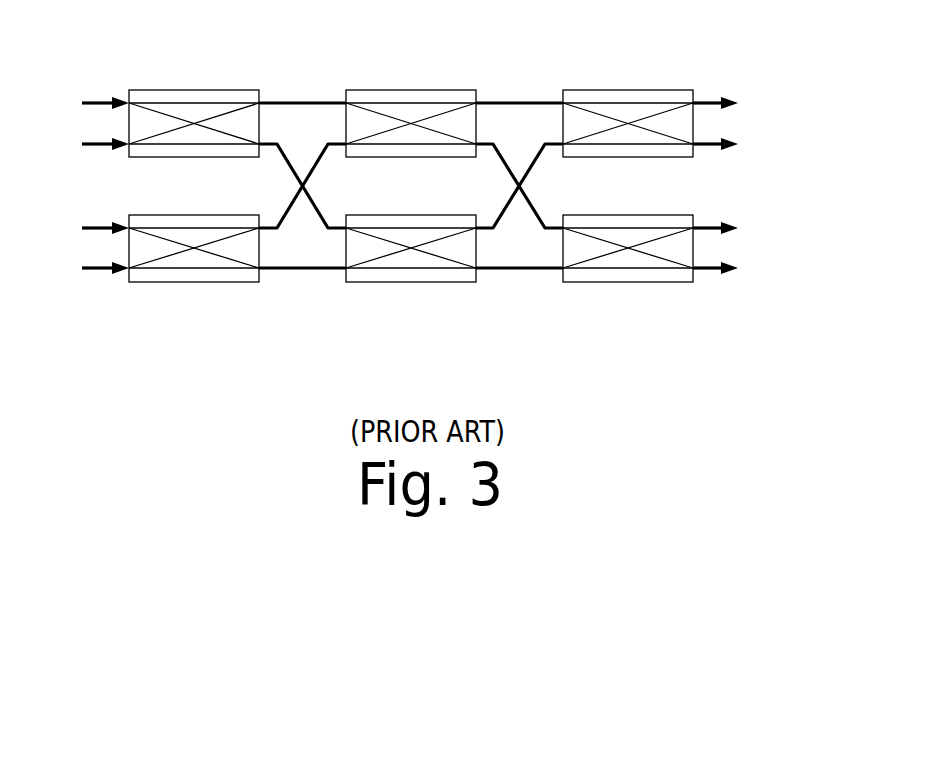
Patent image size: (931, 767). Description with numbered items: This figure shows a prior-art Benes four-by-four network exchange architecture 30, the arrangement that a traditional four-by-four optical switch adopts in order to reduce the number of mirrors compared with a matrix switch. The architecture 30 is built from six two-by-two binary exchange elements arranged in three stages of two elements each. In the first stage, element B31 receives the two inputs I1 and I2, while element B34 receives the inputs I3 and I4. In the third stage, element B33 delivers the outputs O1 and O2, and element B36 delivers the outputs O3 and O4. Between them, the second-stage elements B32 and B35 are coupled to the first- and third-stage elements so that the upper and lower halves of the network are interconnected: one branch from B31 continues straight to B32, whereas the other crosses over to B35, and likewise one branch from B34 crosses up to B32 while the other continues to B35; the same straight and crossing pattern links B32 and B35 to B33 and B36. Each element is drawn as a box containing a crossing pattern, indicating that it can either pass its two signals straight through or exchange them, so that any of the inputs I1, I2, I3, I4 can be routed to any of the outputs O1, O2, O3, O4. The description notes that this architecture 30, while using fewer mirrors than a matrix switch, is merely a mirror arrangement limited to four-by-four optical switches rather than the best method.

The Benes 4×4 network exchange architecture 30 is at (726, 61).
The binary switch element B31 is at (212, 89).
The binary switch element B32 is at (428, 90).
The binary switch element B33 is at (646, 90).
The binary switch element B34 is at (175, 283).
The binary switch element B35 is at (400, 283).
The binary switch element B36 is at (613, 283).
The input I1 is at (88, 102).
The input I2 is at (88, 144).
The input I3 is at (88, 228).
The input I4 is at (88, 268).
The output O1 is at (735, 108).
The output O2 is at (735, 149).
The output O3 is at (735, 233).
The output O4 is at (735, 273).